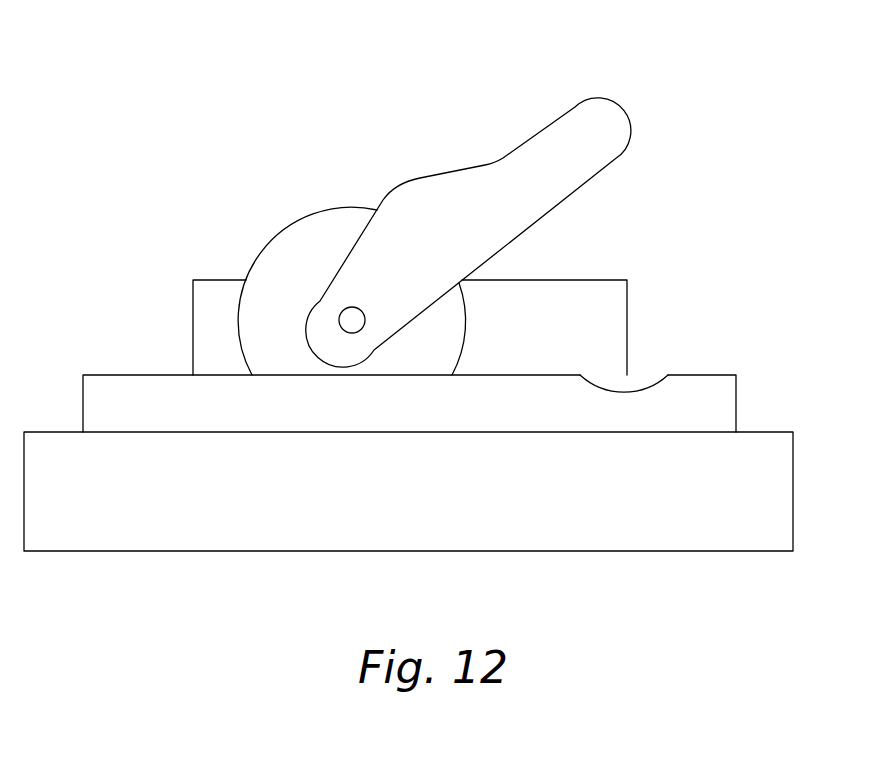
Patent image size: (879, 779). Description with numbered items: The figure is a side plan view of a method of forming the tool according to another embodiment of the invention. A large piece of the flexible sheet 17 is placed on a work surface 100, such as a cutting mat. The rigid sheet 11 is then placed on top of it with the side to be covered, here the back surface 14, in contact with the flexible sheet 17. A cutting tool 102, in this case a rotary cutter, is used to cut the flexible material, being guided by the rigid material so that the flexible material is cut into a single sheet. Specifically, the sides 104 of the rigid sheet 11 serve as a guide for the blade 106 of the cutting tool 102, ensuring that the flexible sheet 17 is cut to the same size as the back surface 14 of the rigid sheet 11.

The work surface 100 is at (746, 522).
The flexible sheet 17 is at (456, 352).
The back surface 14 is at (665, 378).
The rigid sheet 11 is at (455, 297).
The sides 104 is at (519, 310).
The blade 106 is at (290, 227).
The cutting tool 102 is at (462, 163).